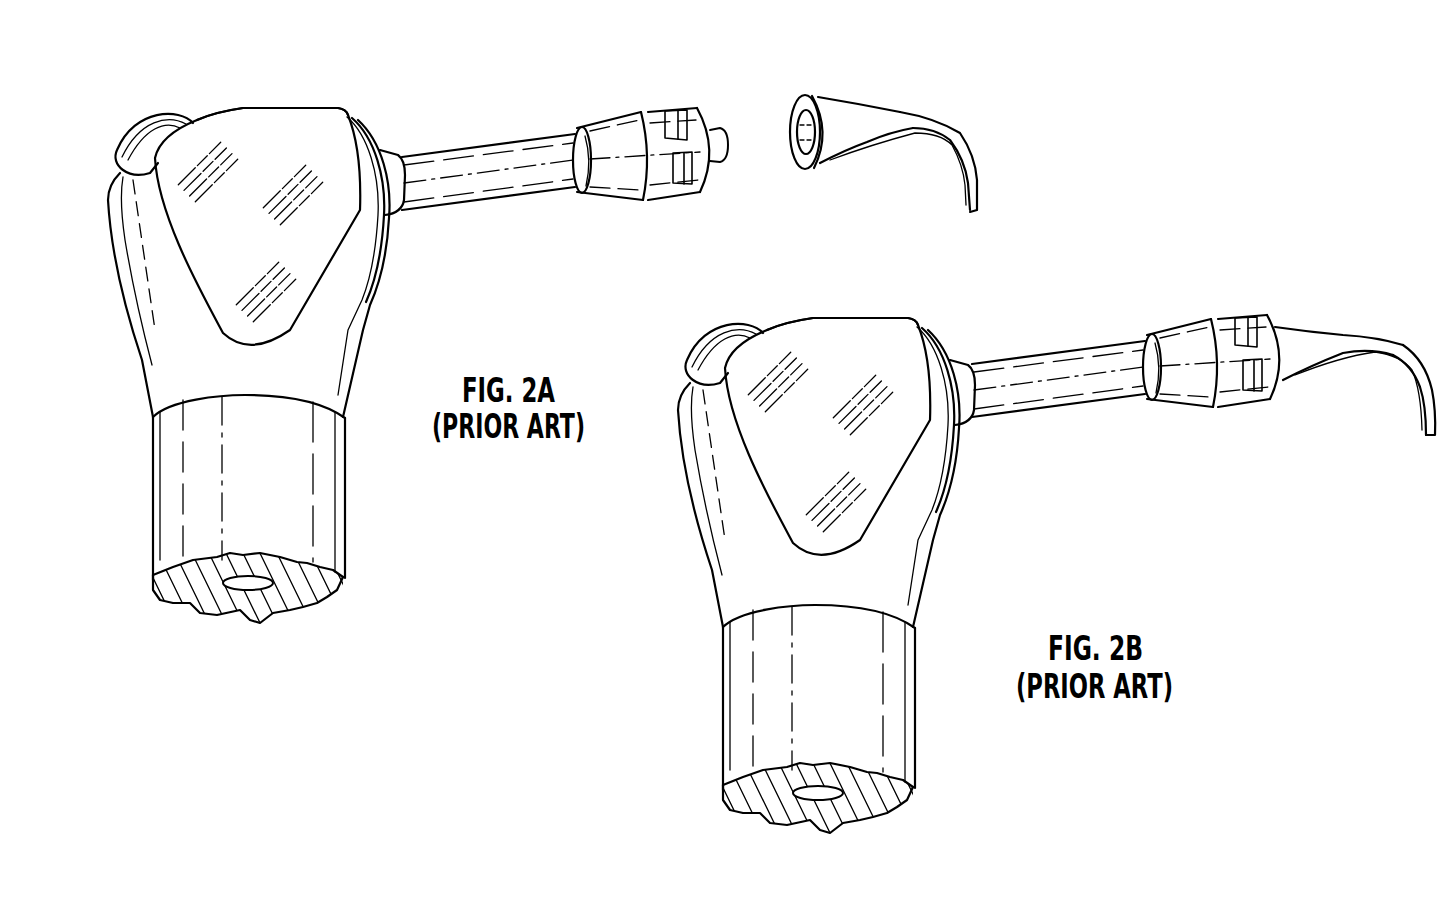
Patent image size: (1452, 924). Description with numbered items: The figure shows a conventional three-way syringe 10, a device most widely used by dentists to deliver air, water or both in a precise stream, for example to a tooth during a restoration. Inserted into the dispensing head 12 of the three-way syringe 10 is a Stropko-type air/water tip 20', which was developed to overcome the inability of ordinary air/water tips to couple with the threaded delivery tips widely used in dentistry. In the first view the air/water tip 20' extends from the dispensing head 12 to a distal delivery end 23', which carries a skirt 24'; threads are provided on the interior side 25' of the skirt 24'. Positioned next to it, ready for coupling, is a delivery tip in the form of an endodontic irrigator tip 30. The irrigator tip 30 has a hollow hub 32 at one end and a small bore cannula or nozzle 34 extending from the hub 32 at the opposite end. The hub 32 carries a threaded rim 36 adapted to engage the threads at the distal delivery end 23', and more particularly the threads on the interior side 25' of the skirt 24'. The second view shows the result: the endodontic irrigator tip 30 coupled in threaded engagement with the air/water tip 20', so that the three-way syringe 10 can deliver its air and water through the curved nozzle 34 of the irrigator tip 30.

In FIG. 2A, the three-way syringe 10 is at (378, 115).
In FIG. 2B, the three-way syringe 10 is at (948, 325).
In FIG. 2A, the dispensing head 12 is at (275, 108).
In FIG. 2B, the dispensing head 12 is at (845, 318).
In FIG. 2A, the Stropko-type air/water tip 20' is at (488, 202).
In FIG. 2B, the Stropko-type air/water tip 20' is at (1058, 407).
In FIG. 2A, the distal delivery end 23' is at (754, 105).
In FIG. 2A, the skirt 24' is at (659, 177).
In FIG. 2A, the interior side of skirt 25' is at (698, 112).
In FIG. 2A, the endodontic irrigator tip 30 is at (922, 103).
In FIG. 2B, the endodontic irrigator tip 30 is at (1315, 398).
In FIG. 2A, the hollow hub 32 is at (838, 100).
In FIG. 2B, the hollow hub 32 is at (1290, 323).
In FIG. 2A, the nozzle 34 is at (978, 162).
In FIG. 2B, the nozzle 34 is at (1402, 338).
In FIG. 2A, the threaded rim 36 is at (820, 170).
In FIG. 2B, the threaded rim 36 is at (1247, 403).